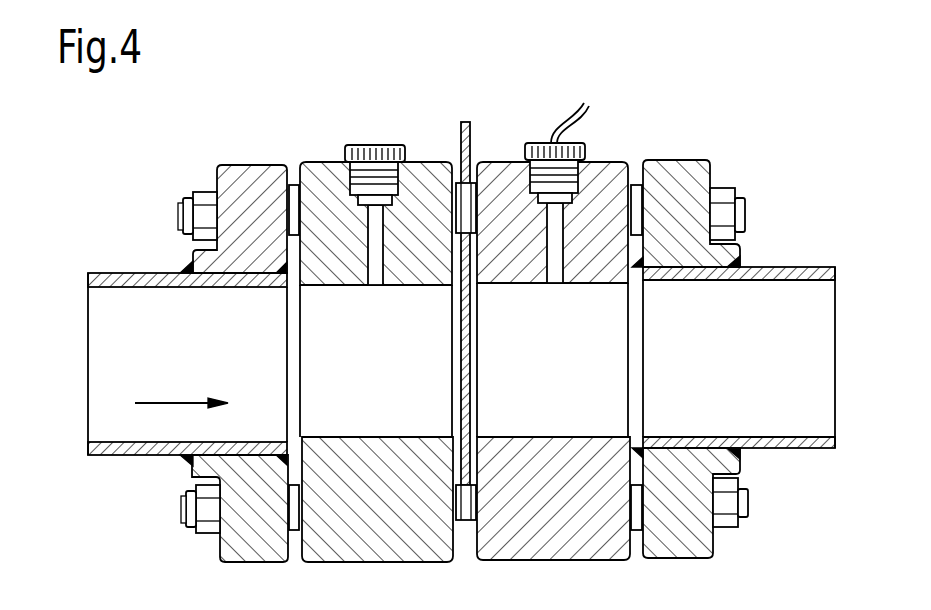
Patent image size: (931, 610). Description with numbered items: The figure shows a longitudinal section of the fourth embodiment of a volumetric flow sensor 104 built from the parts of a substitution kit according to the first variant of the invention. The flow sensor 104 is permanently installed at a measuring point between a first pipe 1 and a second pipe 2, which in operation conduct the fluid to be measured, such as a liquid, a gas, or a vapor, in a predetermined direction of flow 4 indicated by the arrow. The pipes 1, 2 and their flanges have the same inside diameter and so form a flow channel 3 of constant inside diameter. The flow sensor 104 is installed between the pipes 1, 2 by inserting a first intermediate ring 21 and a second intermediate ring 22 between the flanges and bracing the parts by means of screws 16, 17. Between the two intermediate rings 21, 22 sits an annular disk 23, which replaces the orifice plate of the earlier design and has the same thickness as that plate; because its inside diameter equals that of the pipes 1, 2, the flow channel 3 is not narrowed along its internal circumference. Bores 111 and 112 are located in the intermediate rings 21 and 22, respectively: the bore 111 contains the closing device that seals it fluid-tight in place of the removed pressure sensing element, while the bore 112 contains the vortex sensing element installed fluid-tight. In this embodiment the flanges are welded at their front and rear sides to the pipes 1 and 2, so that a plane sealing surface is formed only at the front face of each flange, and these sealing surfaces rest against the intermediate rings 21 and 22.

The first pipe 1 is at (120, 272).
The second pipe 2 is at (793, 267).
The flow channel 3 is at (822, 340).
The direction of flow 4 is at (170, 404).
The screw 16 is at (725, 192).
The screw 17 is at (733, 523).
The first intermediate ring 21 is at (320, 178).
The second intermediate ring 22 is at (620, 163).
The annular disk 23 is at (468, 122).
The flow sensor 104 is at (512, 289).
The bore 111 is at (370, 286).
The bore 112 is at (552, 284).